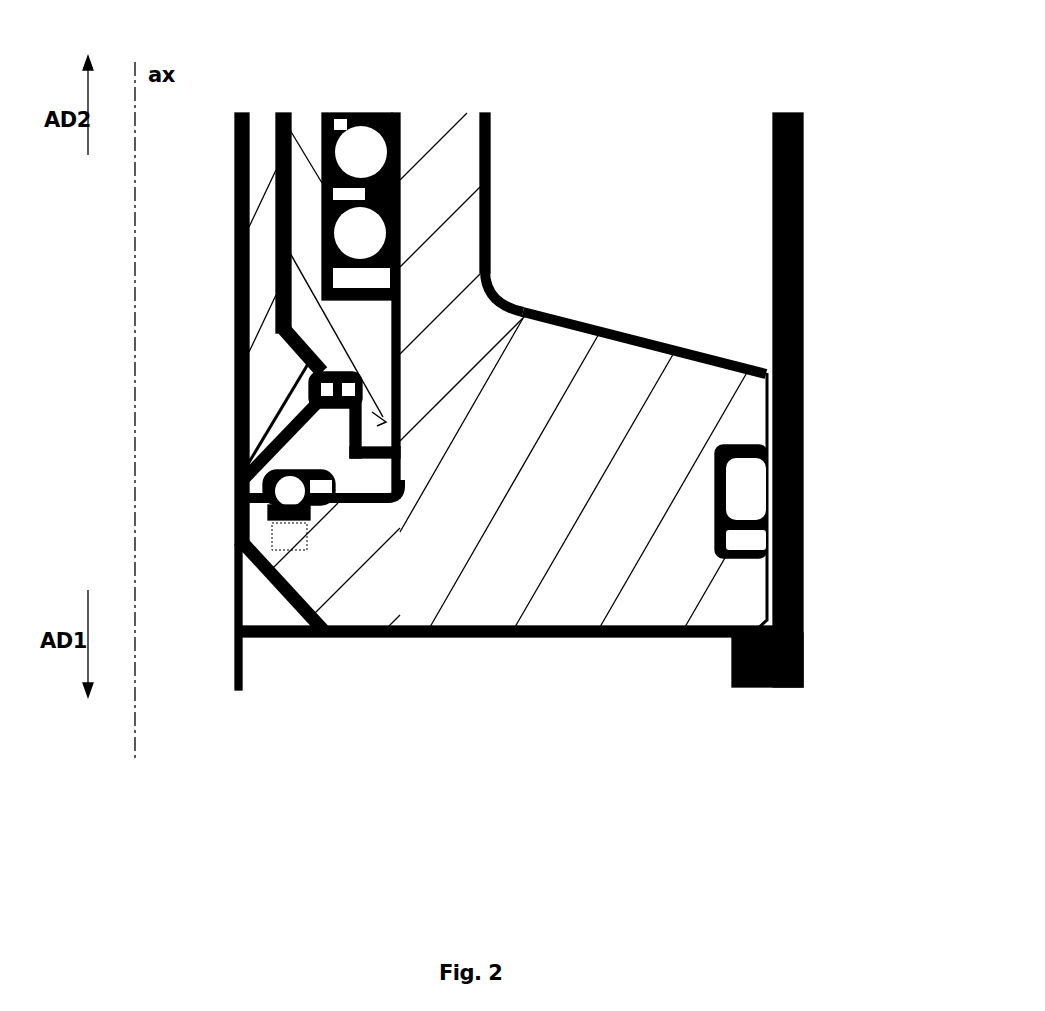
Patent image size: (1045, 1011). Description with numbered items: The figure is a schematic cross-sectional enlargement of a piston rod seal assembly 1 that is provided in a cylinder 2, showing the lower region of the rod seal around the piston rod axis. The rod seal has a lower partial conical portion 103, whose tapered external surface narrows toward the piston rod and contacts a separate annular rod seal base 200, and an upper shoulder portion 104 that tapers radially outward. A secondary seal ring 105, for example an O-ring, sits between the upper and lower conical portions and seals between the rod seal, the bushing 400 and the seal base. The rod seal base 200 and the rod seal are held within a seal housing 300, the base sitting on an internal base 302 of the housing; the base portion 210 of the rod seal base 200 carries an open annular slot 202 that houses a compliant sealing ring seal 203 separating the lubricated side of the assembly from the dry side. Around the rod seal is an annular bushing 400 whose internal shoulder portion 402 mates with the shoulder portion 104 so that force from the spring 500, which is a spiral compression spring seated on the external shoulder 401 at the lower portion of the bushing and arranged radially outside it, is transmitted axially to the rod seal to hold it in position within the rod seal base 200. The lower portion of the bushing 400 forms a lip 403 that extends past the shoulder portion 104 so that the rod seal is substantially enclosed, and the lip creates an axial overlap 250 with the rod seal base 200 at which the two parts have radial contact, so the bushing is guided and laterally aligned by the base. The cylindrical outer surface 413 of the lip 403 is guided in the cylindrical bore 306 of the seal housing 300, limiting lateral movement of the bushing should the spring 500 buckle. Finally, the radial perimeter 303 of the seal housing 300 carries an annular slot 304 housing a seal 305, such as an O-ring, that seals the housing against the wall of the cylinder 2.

The piston rod seal assembly 1 is at (318, 82).
The cylinder 2 is at (790, 101).
The lower partial conical portion 103 is at (240, 456).
The shoulder portion 104 is at (345, 353).
The secondary seal ring 105 is at (403, 380).
The rod seal base 200 is at (338, 445).
The annular slot 202 is at (322, 508).
The sealing ring seal 203 is at (275, 493).
The base portion 210 is at (224, 472).
The axial overlap 250 is at (403, 423).
The seal housing 300 is at (639, 472).
The internal base 302 is at (363, 510).
The radial perimeter 303 is at (803, 413).
The annular slot 304 is at (770, 542).
The seal 305 is at (770, 468).
The cylindrical bore 306 is at (390, 505).
The bushing 400 is at (340, 115).
The external shoulder 401 is at (400, 295).
The internal shoulder portion 402 is at (403, 340).
The lip 403 is at (400, 461).
The cylindrical outer surface 413 is at (403, 408).
The spring 500 is at (355, 147).